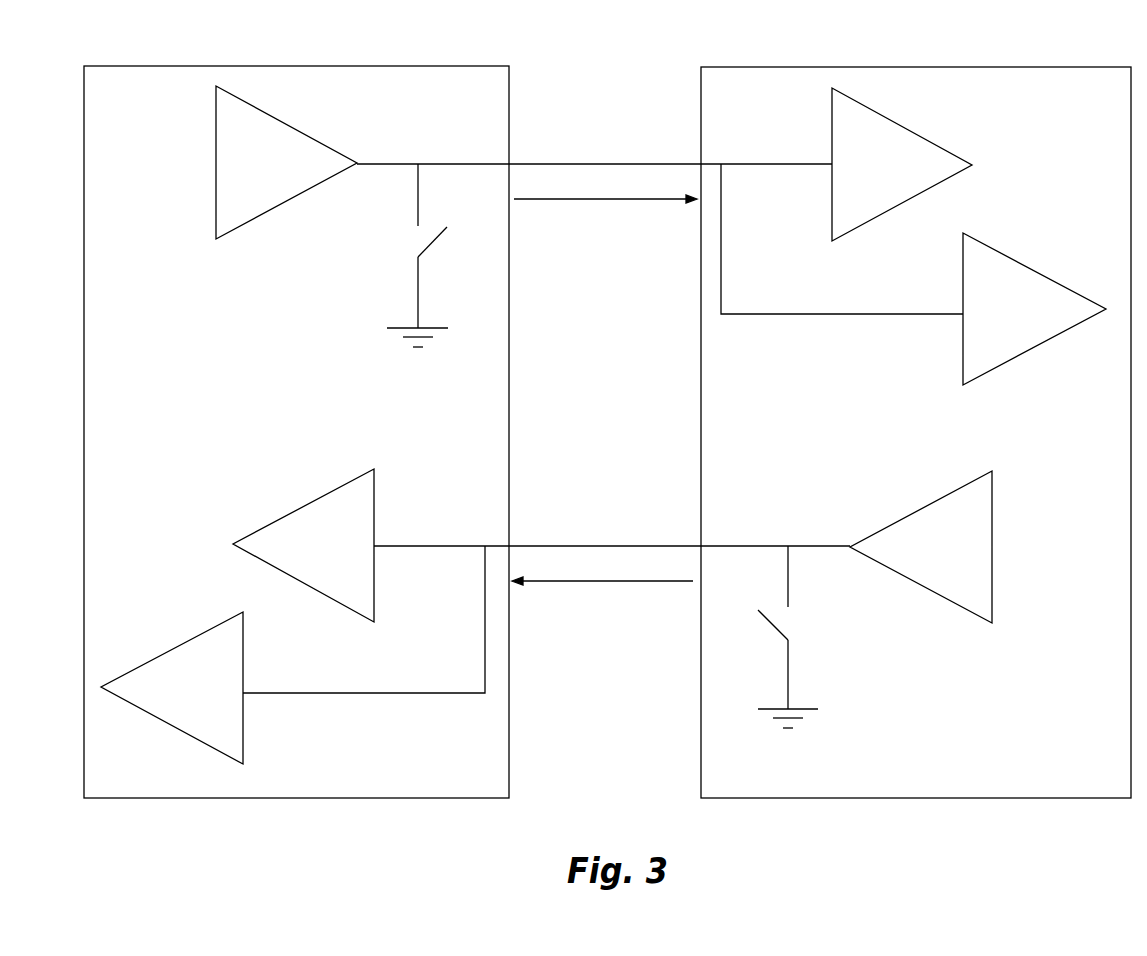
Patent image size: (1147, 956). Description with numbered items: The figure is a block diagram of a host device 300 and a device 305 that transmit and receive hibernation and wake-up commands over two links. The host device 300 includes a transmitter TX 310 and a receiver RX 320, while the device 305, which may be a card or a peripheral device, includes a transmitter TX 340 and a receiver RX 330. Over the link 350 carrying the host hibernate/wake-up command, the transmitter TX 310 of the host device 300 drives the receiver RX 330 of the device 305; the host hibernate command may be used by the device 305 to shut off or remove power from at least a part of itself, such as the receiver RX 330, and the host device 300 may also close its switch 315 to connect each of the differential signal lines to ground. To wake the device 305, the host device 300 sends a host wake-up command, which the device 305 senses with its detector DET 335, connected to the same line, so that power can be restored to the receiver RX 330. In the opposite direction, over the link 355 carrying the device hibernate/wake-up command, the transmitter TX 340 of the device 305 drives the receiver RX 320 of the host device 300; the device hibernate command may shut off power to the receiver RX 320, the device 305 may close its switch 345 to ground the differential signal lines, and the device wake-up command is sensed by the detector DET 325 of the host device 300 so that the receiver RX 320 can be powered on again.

The host device 300 is at (296, 414).
The device 305 is at (916, 415).
The transmitter TX 310 is at (286, 162).
The switch 315 is at (437, 242).
The receiver RX 320 is at (303, 545).
The detector DET 325 is at (293, 655).
The receiver RX 330 is at (902, 164).
The detector DET 335 is at (913, 274).
The transmitter TX 340 is at (921, 547).
The switch 345 is at (760, 617).
The host-to-device link carrying host hibernate/wake-up command 350 is at (559, 163).
The device-to-host link carrying device hibernate/wake-up command 355 is at (562, 545).